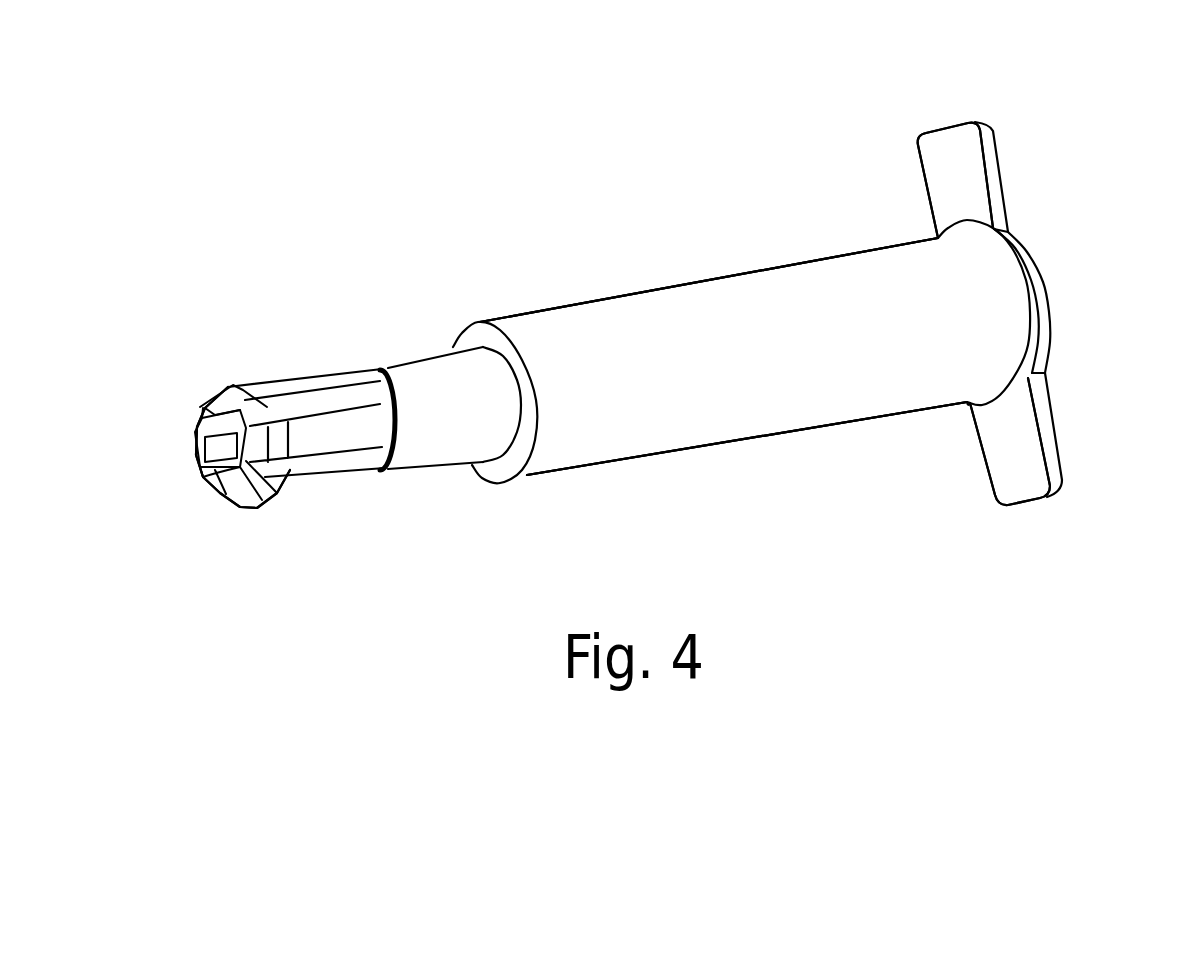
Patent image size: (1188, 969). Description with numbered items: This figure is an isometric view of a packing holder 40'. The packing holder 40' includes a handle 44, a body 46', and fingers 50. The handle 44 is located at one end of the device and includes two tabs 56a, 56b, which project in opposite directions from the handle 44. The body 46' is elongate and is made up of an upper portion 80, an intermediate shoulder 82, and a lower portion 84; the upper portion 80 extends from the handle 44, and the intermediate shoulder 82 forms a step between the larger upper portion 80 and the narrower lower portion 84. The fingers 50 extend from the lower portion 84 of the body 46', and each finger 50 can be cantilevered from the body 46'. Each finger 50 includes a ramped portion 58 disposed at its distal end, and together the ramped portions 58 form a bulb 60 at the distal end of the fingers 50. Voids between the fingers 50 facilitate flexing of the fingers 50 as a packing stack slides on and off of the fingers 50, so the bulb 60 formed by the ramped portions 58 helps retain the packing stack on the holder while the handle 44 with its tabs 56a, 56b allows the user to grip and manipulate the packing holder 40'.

The packing holder 40' is at (623, 282).
The handle 44 is at (1037, 267).
The body 46' is at (723, 341).
The fingers 50 is at (323, 433).
The tab 56a is at (980, 141).
The tab 56b is at (1053, 467).
The ramped portion 58 is at (215, 377).
The bulb 60 is at (262, 517).
The upper portion 80 is at (798, 295).
The intermediate shoulder 82 is at (478, 326).
The lower portion 84 is at (383, 367).